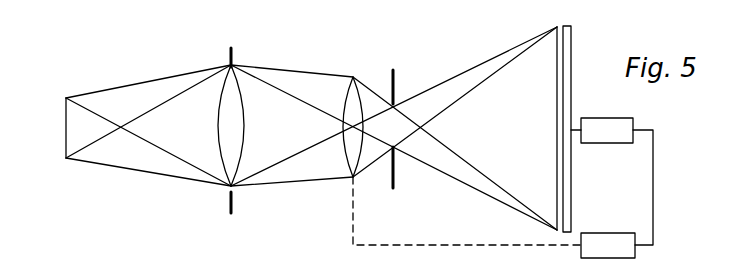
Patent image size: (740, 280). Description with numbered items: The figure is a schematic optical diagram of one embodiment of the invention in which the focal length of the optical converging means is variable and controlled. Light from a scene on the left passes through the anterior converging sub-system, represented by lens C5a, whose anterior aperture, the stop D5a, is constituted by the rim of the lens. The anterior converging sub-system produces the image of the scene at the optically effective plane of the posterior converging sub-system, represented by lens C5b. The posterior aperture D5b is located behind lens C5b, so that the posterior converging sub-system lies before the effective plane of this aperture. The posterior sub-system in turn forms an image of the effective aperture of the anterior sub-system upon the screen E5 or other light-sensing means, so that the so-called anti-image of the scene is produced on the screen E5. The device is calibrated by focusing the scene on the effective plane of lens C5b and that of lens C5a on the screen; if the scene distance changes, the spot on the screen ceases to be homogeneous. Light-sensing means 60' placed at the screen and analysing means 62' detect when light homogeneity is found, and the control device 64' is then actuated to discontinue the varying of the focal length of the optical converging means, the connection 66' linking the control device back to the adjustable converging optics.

The anterior converging sub-system lens C5a is at (233, 148).
The anterior aperture stop D5a is at (229, 66).
The posterior converging sub-system lens C5b is at (349, 95).
The posterior aperture D5b is at (417, 48).
The screen E5 is at (557, 88).
The light-sensing means 60' is at (583, 129).
The analysing means 62' is at (612, 167).
The control device 64' is at (608, 232).
The connection line 66' is at (467, 211).